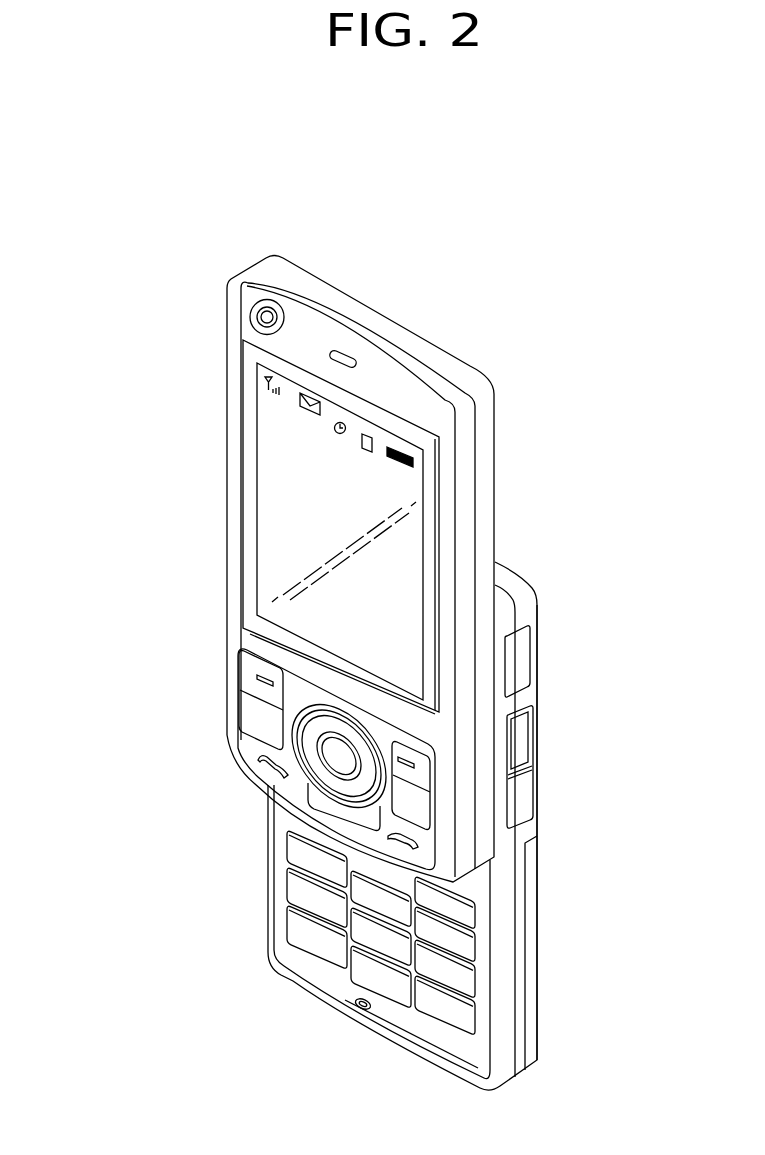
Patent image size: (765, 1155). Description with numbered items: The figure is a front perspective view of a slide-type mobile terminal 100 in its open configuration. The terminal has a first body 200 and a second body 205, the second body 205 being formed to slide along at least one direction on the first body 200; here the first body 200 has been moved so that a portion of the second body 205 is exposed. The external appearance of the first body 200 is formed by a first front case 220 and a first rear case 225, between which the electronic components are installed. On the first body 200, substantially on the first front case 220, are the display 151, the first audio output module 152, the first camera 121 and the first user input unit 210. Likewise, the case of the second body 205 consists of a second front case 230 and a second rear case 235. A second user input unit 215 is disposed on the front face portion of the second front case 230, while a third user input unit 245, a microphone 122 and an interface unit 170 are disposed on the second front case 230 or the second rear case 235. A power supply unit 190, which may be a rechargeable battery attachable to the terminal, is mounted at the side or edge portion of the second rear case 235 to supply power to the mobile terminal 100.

The mobile terminal 100 is at (518, 297).
The first body 200 is at (197, 392).
The second body 205 is at (258, 864).
The first user input unit 210 is at (253, 706).
The second user input unit 215 is at (293, 917).
The display 151 is at (275, 482).
The first audio output module 152 is at (344, 352).
The first camera 121 is at (271, 317).
The microphone 122 is at (362, 1010).
The interface unit 170 is at (520, 655).
The first front case 220 is at (465, 453).
The first rear case 225 is at (487, 430).
The second front case 230 is at (510, 610).
The second rear case 235 is at (517, 582).
The third user input unit 245 is at (520, 798).
The power supply unit 190 is at (533, 960).